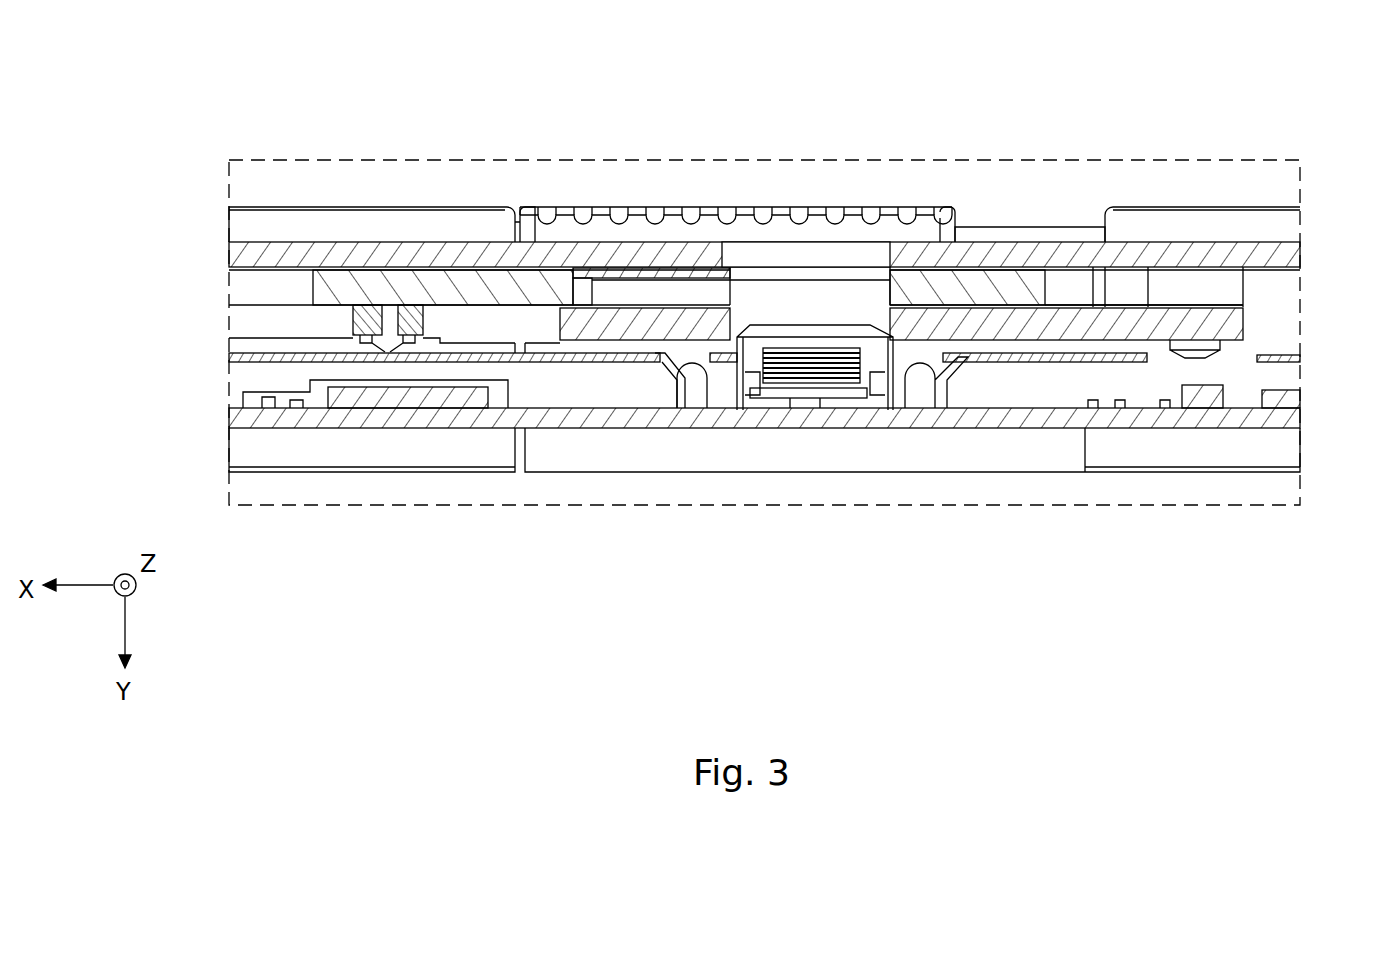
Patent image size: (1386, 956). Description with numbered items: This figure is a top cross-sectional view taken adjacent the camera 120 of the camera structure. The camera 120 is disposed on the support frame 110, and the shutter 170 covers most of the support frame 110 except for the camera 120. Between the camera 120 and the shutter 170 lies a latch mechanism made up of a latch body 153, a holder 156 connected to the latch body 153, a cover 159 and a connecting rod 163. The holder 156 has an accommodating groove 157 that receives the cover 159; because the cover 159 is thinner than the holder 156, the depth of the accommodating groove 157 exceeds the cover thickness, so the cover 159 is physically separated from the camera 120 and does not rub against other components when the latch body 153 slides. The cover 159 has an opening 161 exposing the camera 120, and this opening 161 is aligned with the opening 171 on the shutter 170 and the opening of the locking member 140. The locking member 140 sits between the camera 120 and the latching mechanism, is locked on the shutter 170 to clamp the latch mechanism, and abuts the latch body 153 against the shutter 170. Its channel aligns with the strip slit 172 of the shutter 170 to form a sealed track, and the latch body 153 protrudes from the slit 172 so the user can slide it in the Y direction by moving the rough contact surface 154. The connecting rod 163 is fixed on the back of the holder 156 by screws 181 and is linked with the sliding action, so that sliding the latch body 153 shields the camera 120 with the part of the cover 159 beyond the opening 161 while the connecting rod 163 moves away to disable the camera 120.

The support frame 110 is at (1283, 408).
The camera 120 is at (810, 430).
The locking member 140 is at (1228, 327).
The latch body 153 is at (890, 228).
The rough contact surface 154 is at (795, 205).
The holder 156 is at (315, 285).
The accommodating groove 157 is at (565, 283).
The cover 159 is at (652, 272).
The opening 161 is at (722, 292).
The connecting rod 163 is at (245, 322).
The shutter 170 is at (1215, 225).
The opening 171 is at (722, 240).
The strip slit 172 is at (1123, 205).
The screws 181 is at (383, 345).